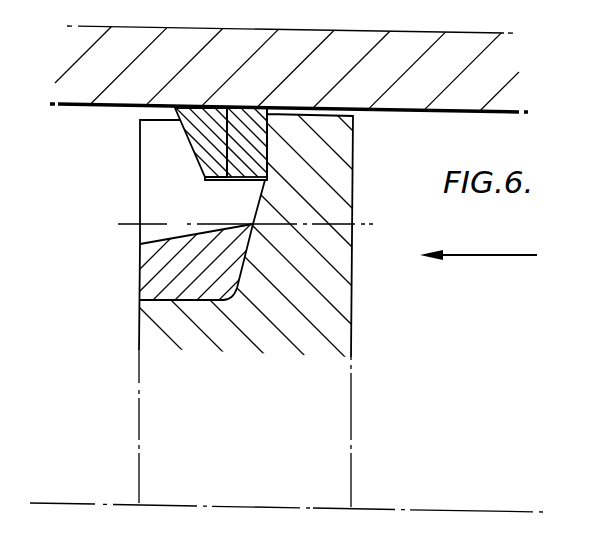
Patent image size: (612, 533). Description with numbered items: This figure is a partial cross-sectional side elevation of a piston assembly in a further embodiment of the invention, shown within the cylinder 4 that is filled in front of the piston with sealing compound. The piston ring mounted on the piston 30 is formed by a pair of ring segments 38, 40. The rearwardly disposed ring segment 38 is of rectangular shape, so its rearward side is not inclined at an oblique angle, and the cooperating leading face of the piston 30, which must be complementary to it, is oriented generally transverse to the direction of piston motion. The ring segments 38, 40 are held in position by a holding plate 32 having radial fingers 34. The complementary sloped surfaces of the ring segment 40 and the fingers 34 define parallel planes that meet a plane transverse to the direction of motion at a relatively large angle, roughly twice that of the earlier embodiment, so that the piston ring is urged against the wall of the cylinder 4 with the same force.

The cylinder 4 is at (82, 88).
The piston 30 is at (337, 298).
The holding plate 32 is at (148, 270).
The radial fingers 34 is at (140, 163).
The ring segment 38 is at (250, 138).
The ring segment 40 is at (193, 127).